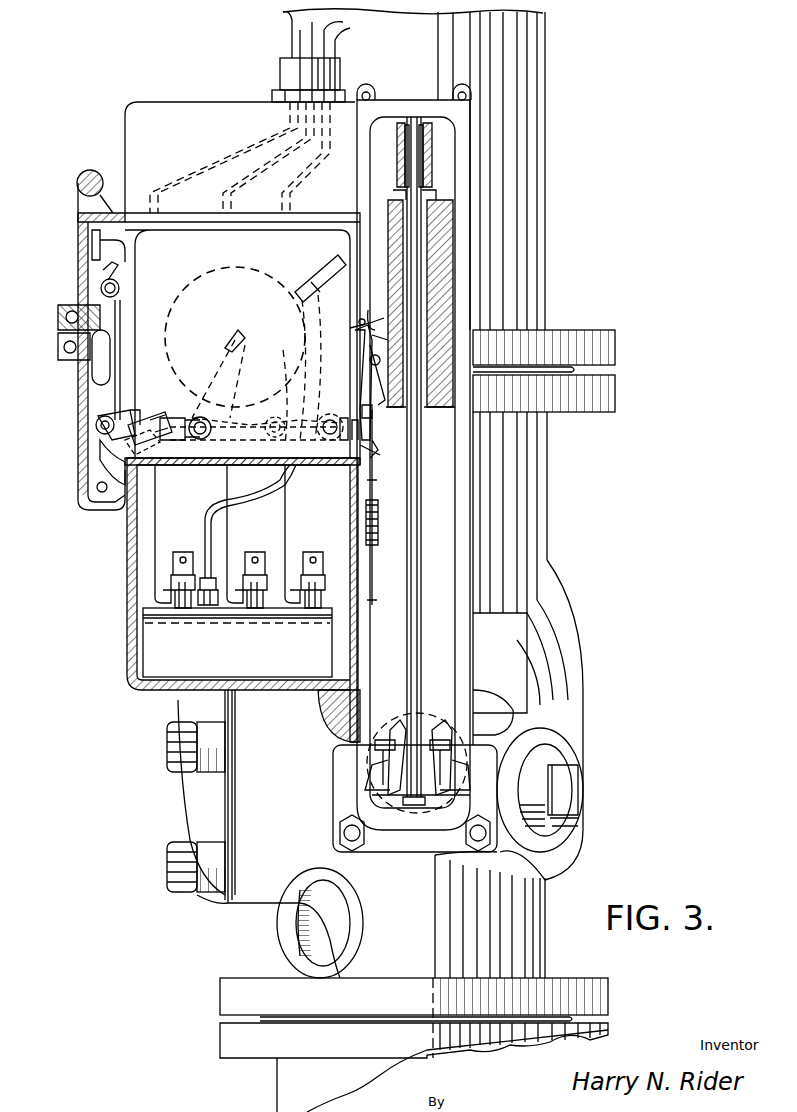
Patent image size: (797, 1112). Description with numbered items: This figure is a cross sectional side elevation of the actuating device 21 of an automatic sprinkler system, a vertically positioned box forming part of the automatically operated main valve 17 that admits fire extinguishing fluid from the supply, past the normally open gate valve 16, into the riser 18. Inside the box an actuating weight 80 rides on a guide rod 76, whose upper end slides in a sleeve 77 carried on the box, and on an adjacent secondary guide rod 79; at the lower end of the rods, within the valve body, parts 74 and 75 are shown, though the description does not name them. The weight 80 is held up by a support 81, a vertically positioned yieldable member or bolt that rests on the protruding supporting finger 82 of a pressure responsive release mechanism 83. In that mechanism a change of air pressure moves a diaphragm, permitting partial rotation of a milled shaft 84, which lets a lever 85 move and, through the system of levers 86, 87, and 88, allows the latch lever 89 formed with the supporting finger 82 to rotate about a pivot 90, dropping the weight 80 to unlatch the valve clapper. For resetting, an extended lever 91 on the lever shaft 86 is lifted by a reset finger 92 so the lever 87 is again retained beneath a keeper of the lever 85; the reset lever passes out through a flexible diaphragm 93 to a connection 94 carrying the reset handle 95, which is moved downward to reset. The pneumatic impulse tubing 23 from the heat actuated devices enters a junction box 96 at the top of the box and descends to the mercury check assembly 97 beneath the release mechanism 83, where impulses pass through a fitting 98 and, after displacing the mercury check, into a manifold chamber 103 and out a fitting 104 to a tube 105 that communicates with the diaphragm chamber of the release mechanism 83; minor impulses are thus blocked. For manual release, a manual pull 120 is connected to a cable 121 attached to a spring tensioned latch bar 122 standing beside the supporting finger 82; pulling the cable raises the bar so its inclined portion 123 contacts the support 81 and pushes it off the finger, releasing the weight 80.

The gate valve 16 is at (277, 1095).
The main valve 17 is at (255, 800).
The riser 18 is at (545, 146).
The actuating device 21 is at (380, 104).
The pneumatic impulse tubing 23 is at (332, 55).
The contact 74 is at (397, 758).
The contact 75 is at (444, 745).
The guide rod 76 is at (424, 692).
The sleeve 77 is at (428, 120).
The secondary guide rod 79 is at (416, 650).
The actuating weight 80 is at (455, 300).
The support 81 is at (370, 372).
The supporting finger 82 is at (375, 418).
The pressure responsive release mechanism 83 is at (175, 250).
The milled shaft 84 is at (225, 340).
The lever 85 is at (242, 345).
The lever shaft 86 is at (203, 438).
The lever 87 is at (222, 428).
The lever 88 is at (280, 418).
The latch lever 89 is at (316, 418).
The pivot 90 is at (326, 440).
The extended lever 91 is at (172, 417).
The reset finger 92 is at (155, 438).
The flexible diaphragm 93 is at (140, 410).
The connection 94 is at (96, 432).
The reset handle 95 is at (92, 380).
The junction box 96 is at (165, 135).
The mercury check assembly 97 is at (202, 656).
The fitting 98 is at (323, 578).
The manifold chamber 103 is at (262, 624).
The fitting 104 is at (212, 580).
The tube 105 is at (215, 522).
The manual pull 120 is at (100, 290).
The cable 121 is at (95, 240).
The latch bar 122 is at (373, 478).
The inclined portion 123 is at (378, 450).